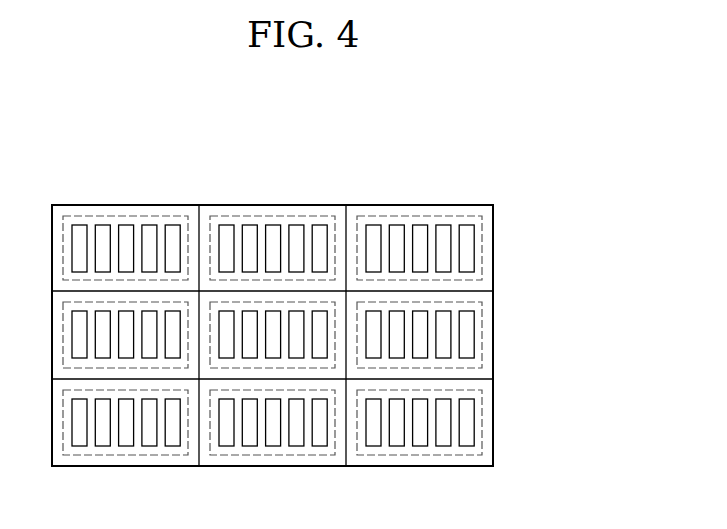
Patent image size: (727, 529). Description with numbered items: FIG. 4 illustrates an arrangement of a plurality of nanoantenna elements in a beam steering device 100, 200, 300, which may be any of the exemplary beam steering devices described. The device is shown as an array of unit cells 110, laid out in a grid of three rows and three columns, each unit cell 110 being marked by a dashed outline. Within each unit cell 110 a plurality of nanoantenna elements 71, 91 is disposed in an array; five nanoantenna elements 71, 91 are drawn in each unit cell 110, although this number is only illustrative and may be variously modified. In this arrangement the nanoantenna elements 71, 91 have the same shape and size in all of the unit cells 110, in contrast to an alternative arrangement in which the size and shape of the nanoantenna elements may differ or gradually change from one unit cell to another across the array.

The unit cell 110 is at (82, 215).
The nanoantenna element 71 is at (169, 207).
The nanoantenna element 91 is at (172, 222).
The beam steering device 100 is at (343, 289).
The beam steering device 200 is at (343, 289).
The beam steering device 300 is at (343, 289).